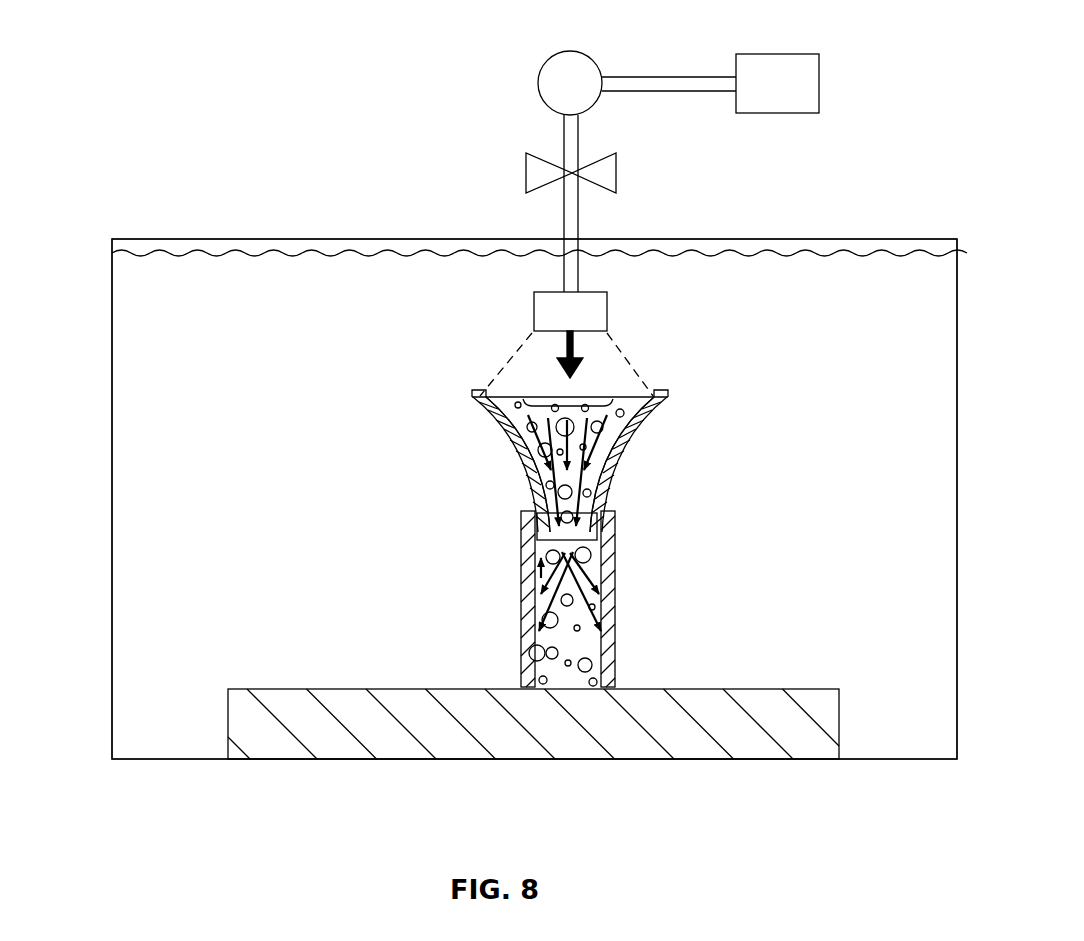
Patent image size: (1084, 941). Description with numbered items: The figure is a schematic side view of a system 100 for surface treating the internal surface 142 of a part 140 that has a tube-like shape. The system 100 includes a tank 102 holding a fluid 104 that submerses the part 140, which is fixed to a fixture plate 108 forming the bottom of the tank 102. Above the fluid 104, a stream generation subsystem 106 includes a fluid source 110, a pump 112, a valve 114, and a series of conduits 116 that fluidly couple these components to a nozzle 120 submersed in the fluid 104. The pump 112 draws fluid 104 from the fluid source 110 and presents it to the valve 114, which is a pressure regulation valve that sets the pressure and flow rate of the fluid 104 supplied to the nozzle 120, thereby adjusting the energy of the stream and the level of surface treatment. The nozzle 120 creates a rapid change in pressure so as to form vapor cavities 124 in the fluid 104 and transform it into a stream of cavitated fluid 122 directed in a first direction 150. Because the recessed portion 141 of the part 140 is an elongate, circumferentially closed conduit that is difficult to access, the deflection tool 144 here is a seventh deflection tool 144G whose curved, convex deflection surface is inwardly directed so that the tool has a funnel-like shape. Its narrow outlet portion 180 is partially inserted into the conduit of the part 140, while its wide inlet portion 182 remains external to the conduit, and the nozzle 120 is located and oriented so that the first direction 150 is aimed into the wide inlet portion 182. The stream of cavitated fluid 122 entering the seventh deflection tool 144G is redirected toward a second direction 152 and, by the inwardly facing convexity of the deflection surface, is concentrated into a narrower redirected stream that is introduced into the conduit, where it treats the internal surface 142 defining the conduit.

The system 100 is at (886, 188).
The tank 102 is at (112, 432).
The fluid 104 is at (277, 246).
The stream generation subsystem 106 is at (648, 150).
The fixture plate 108 is at (247, 689).
The fluid source 110 is at (819, 68).
The pump 112 is at (583, 52).
The valve 114 is at (526, 171).
The conduits 116 is at (648, 77).
The nozzle 120 is at (598, 307).
The stream of cavitated fluid 122 is at (528, 343).
The vapor cavities 124 is at (605, 483).
The part 140 is at (618, 553).
The recessed portion 141 is at (591, 672).
The internal surface 142 is at (634, 404).
The deflection tool 144 is at (512, 463).
The seventh deflection tool 144G is at (631, 445).
The first direction 150 is at (574, 350).
The second direction 152 is at (567, 396).
The narrow outlet portion 180 is at (538, 593).
The wide inlet portion 182 is at (477, 397).